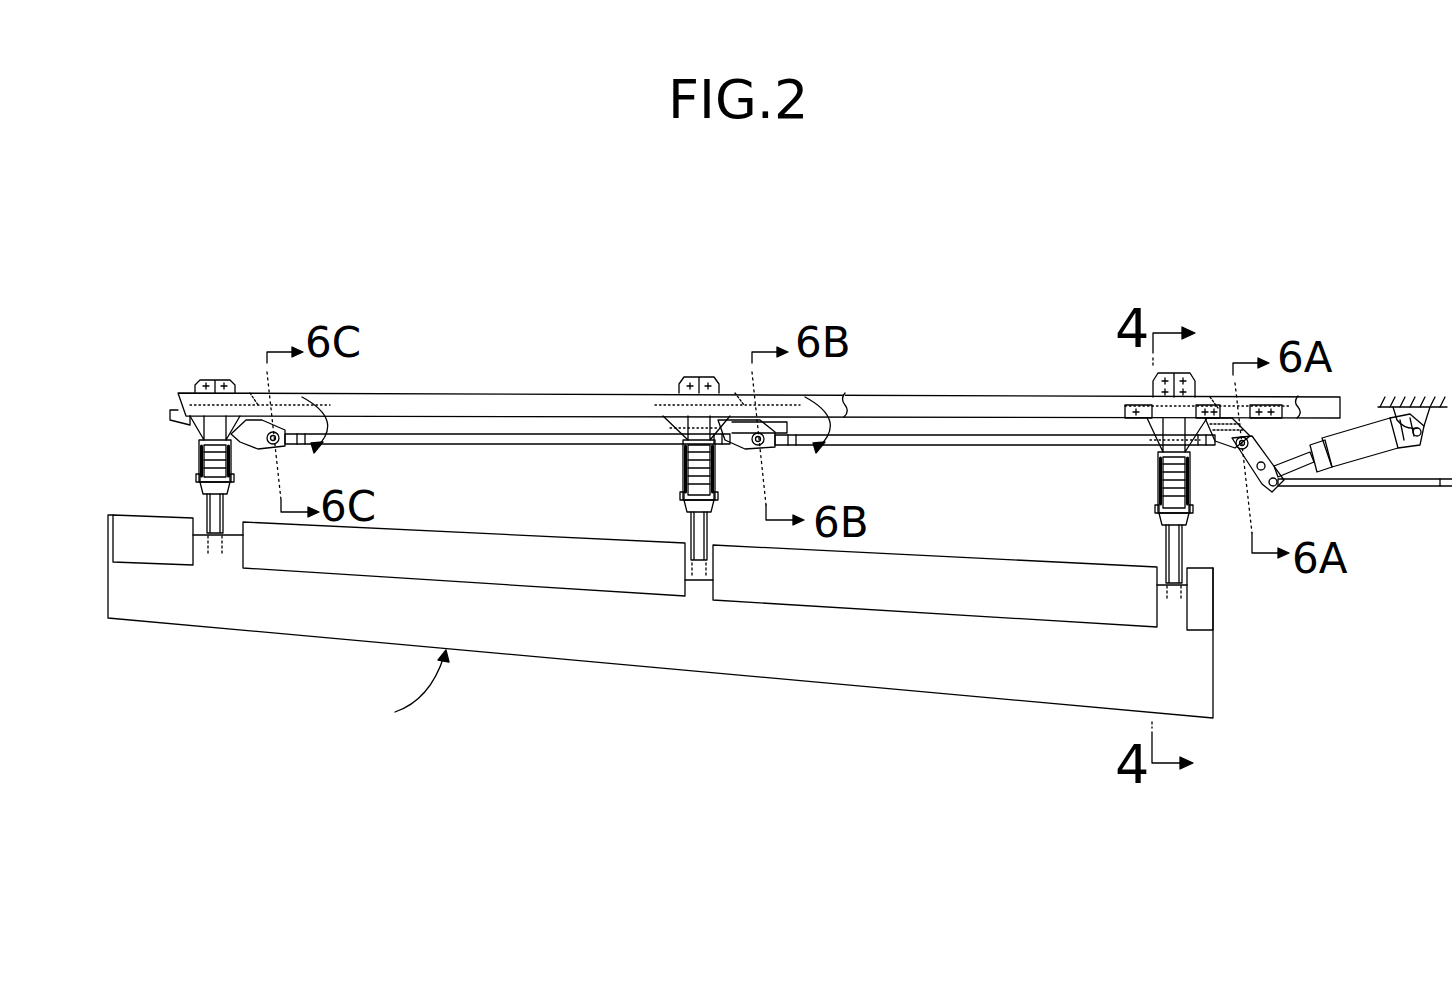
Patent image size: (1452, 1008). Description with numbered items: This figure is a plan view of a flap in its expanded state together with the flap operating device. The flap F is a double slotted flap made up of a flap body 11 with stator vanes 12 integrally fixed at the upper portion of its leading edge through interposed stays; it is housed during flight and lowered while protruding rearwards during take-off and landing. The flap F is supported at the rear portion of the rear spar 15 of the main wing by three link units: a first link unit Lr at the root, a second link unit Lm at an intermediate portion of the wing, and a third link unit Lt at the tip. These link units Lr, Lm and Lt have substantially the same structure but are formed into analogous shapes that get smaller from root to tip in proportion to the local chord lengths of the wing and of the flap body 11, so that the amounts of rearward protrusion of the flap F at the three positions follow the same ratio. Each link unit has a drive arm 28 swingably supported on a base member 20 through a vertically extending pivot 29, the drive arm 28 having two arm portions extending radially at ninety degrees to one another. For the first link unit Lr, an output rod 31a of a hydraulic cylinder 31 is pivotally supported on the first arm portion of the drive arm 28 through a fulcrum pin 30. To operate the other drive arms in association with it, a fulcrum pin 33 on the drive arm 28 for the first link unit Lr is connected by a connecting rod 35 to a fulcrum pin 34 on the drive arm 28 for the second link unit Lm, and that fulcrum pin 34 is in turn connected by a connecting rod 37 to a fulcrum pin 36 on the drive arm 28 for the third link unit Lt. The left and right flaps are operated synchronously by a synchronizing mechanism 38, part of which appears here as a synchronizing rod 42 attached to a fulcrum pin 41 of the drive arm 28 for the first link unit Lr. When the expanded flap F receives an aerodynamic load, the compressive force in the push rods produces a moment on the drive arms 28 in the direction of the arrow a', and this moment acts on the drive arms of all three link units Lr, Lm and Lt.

The flap body 11 is at (646, 658).
The stator vane 12 is at (153, 528).
The rear spar 15 is at (500, 405).
The base member 20 is at (178, 410).
The drive arm 28 is at (233, 448).
The pivot 29 is at (251, 386).
The fulcrum pin 30 is at (1258, 478).
The hydraulic cylinder 31 is at (1365, 430).
The output rod 31a is at (1297, 462).
The fulcrum pin 33 is at (1219, 433).
The fulcrum pin 34 is at (770, 448).
The connecting rod 35 is at (936, 446).
The fulcrum pin 36 is at (281, 448).
The connecting rod 37 is at (449, 446).
The synchronizing mechanism 38 is at (1430, 500).
The fulcrum pin 41 is at (1268, 471).
The synchronizing rod 42 is at (1397, 486).
The flap F is at (408, 694).
The third link unit Lt is at (185, 470).
The second link unit Lm is at (668, 497).
The first link unit Lr is at (1133, 500).
The arrow a' is at (574, 441).